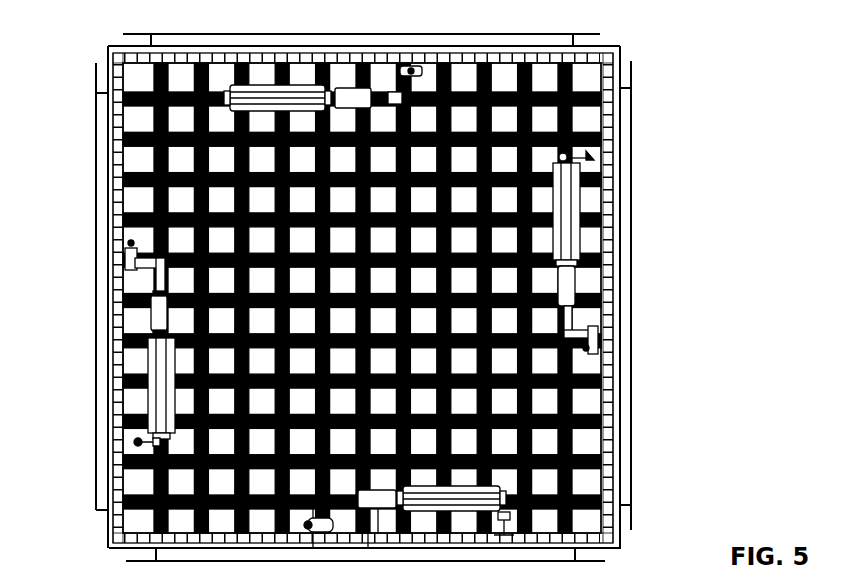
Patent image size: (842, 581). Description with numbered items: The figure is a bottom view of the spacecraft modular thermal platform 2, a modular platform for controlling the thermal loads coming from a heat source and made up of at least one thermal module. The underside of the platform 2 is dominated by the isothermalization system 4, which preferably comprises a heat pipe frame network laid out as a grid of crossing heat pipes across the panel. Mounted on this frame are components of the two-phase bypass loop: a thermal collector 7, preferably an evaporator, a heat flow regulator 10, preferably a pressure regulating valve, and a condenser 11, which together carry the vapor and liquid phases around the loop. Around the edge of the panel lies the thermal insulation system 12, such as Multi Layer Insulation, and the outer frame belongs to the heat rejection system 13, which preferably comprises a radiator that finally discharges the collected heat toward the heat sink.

The spacecraft modular thermal platform 2 is at (665, 357).
The isothermalization system 4 is at (568, 428).
The thermal collector 7 is at (145, 298).
The heat flow regulator 10 is at (118, 257).
The condenser 11 is at (145, 367).
The thermal insulation system 12 is at (598, 239).
The heat rejection system 13 is at (623, 190).